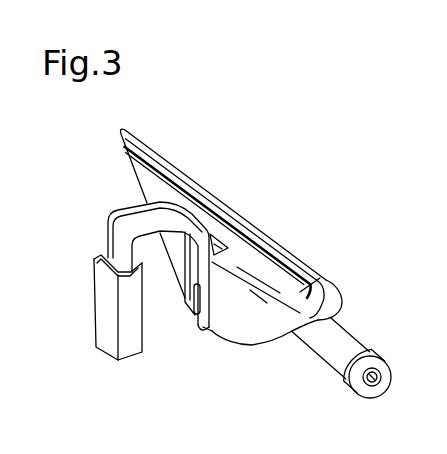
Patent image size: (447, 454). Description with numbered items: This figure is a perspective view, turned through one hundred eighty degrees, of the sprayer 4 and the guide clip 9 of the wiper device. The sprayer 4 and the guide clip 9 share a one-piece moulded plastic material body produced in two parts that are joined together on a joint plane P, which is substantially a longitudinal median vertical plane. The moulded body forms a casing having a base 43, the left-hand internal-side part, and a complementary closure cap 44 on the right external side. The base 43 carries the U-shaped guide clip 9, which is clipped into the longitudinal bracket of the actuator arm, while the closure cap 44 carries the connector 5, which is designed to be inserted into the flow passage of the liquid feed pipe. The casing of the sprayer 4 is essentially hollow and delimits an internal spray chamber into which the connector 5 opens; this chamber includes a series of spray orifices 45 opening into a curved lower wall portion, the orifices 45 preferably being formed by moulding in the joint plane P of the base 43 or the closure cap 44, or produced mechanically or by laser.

The sprayer 4 is at (180, 146).
The closure cap 44 is at (232, 212).
The joint plane P is at (316, 290).
The base 43 is at (240, 327).
The spray orifices 45 is at (283, 337).
The connector 5 is at (365, 357).
The guide clip 9 is at (100, 321).